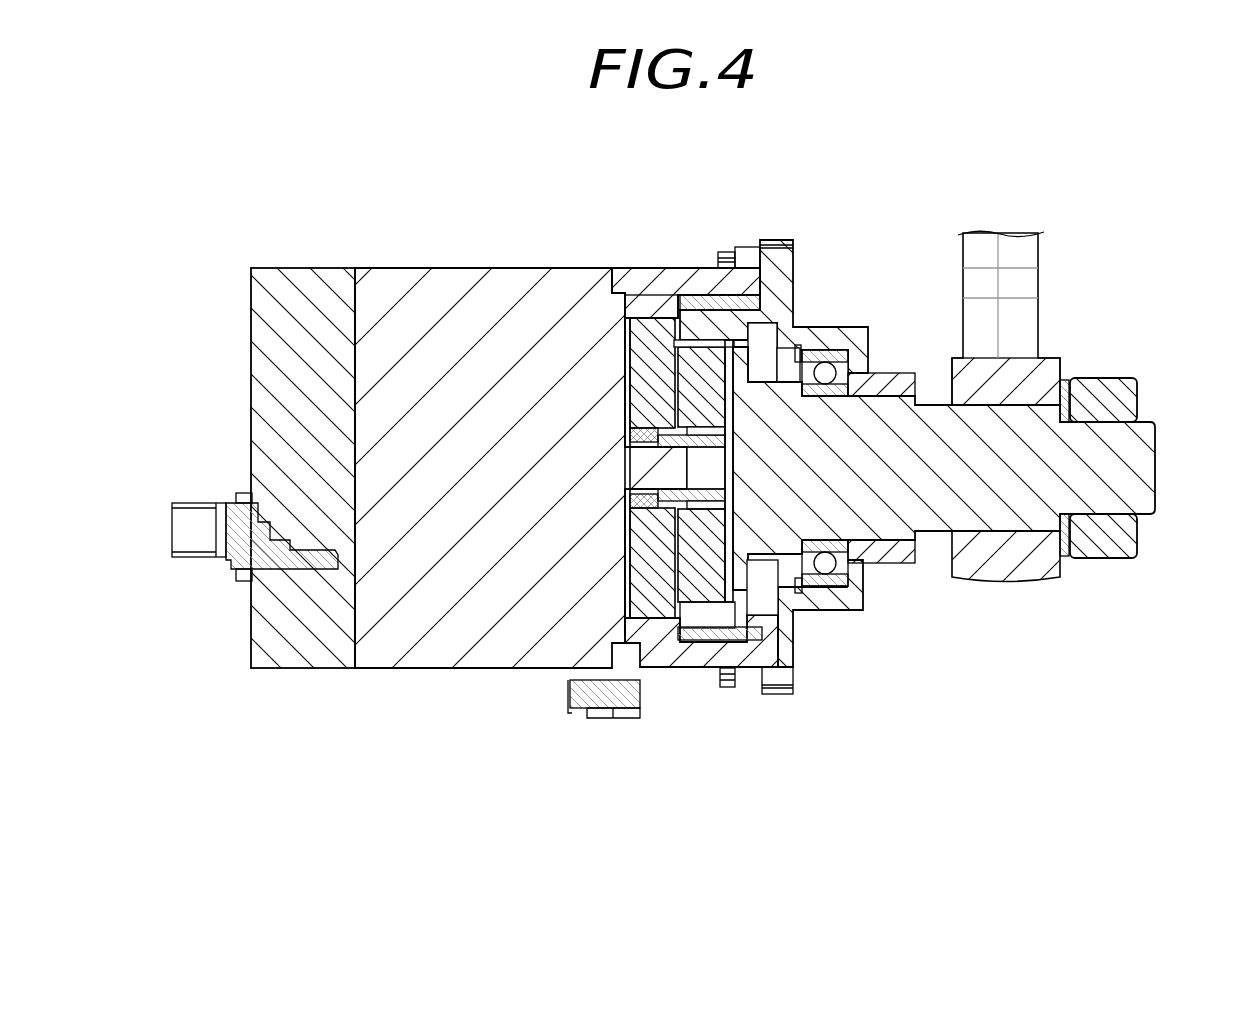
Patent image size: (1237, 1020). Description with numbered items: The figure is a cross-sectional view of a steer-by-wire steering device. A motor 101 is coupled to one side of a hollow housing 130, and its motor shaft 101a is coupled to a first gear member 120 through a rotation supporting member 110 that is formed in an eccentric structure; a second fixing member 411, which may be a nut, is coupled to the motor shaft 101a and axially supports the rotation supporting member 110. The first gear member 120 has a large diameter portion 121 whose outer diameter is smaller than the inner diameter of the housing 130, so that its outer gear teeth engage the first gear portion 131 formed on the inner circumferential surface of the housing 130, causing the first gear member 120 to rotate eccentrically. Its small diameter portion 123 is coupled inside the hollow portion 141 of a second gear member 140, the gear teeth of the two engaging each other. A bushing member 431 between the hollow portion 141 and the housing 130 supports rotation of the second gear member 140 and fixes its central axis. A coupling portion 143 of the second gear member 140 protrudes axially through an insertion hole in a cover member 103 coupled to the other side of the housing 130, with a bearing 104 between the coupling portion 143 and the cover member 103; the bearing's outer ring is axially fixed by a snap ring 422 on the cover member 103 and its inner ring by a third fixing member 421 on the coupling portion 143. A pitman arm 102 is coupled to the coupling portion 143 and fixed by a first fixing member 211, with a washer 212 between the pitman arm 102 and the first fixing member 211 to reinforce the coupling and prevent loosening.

The motor 101 is at (397, 435).
The motor shaft 101a is at (663, 468).
The pitman arm 102 is at (1030, 255).
The cover member 103 is at (776, 278).
The bearing 104 is at (826, 368).
The rotation supporting member 110 is at (627, 435).
The first gear member 120 is at (606, 510).
The large diameter portion 121 is at (647, 573).
The small diameter portion 123 is at (706, 592).
The housing 130 is at (703, 277).
The first gear portion 131 is at (647, 307).
The second gear member 140 is at (933, 532).
The hollow portion 141 is at (740, 620).
The coupling portion 143 is at (1142, 468).
The first fixing member 211 is at (1128, 398).
The washer 212 is at (1066, 385).
The second fixing member 411 is at (675, 427).
The third fixing member 421 is at (888, 383).
The snap ring 422 is at (783, 350).
The bushing member 431 is at (731, 600).